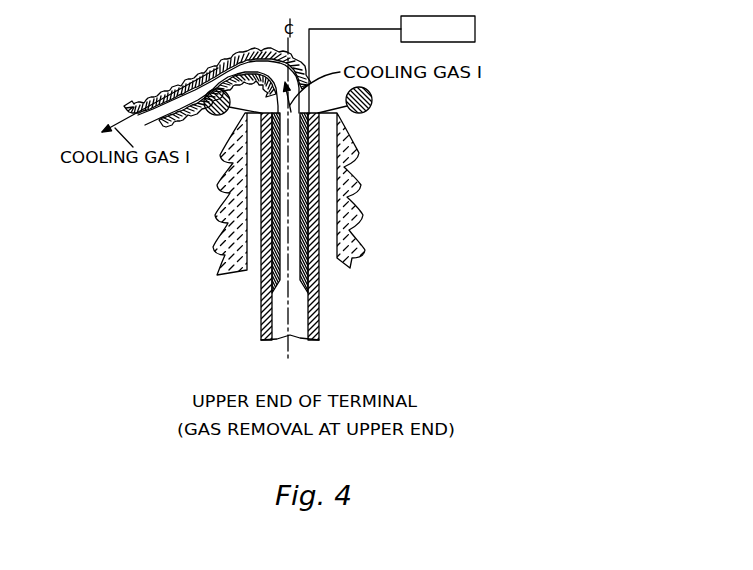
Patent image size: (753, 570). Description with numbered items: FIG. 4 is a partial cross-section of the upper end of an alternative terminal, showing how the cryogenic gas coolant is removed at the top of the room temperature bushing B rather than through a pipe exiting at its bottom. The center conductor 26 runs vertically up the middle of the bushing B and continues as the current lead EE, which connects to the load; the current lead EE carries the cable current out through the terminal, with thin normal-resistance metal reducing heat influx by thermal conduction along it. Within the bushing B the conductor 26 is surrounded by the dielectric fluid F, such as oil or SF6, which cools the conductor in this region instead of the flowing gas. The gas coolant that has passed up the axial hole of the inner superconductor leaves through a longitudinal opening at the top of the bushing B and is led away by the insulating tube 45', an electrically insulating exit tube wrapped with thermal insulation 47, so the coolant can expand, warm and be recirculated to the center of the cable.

The inner conductor 26 is at (320, 269).
The thermal insulation 47 is at (307, 181).
The insulating tube 45' is at (193, 74).
The current lead EE is at (312, 57).
The room temperature bushing B is at (367, 215).
The dielectric fluid F is at (334, 221).